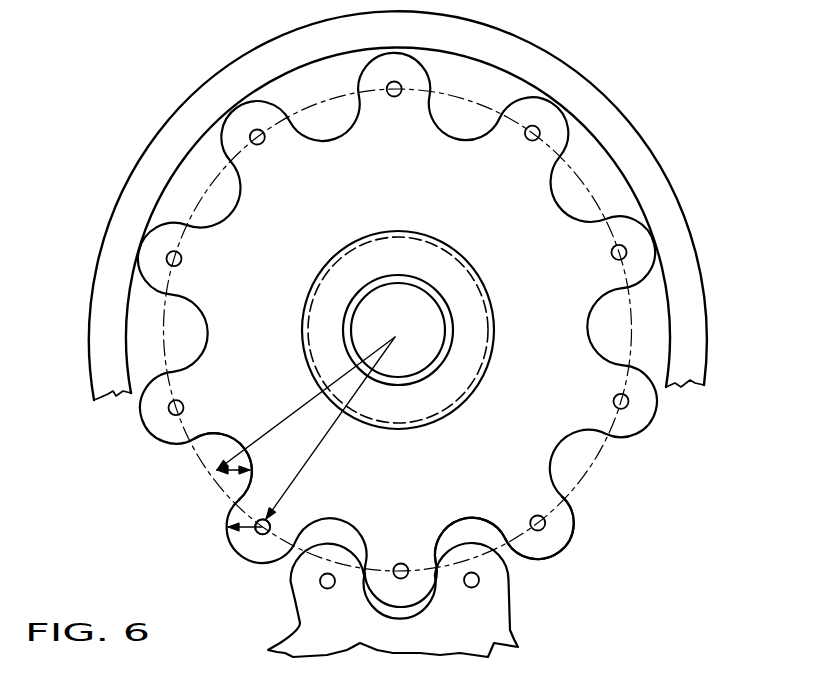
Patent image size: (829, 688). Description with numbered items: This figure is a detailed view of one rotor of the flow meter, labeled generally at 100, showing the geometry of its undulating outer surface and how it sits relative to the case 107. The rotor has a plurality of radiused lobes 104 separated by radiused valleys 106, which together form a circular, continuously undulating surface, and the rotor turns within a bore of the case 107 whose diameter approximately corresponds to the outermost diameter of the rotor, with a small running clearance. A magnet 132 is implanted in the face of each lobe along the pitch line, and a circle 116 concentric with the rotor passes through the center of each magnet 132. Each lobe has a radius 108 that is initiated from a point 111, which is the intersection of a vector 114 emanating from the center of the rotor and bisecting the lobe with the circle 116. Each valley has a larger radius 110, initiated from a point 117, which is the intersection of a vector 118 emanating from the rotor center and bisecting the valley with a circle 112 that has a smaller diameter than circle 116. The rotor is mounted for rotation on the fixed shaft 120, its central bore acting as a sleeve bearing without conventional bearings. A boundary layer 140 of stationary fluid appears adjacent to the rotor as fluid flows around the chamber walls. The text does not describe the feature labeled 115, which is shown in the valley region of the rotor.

The sprocket assembly 100 is at (688, 446).
The radiused lobes 104 is at (552, 128).
The radiused valleys 106 is at (477, 513).
The case 107 is at (672, 183).
The lobe radius 108 is at (241, 553).
The valley radius 110 is at (230, 512).
The point 111 is at (259, 538).
The circle 112 is at (586, 468).
The vector 114 is at (308, 462).
The tooth root 115 is at (193, 458).
The circle 116 is at (566, 548).
The point 117 is at (214, 473).
The vector 118 is at (282, 415).
The shaft 120 is at (416, 329).
The magnet 132 is at (628, 406).
The boundary layer 140 is at (412, 606).